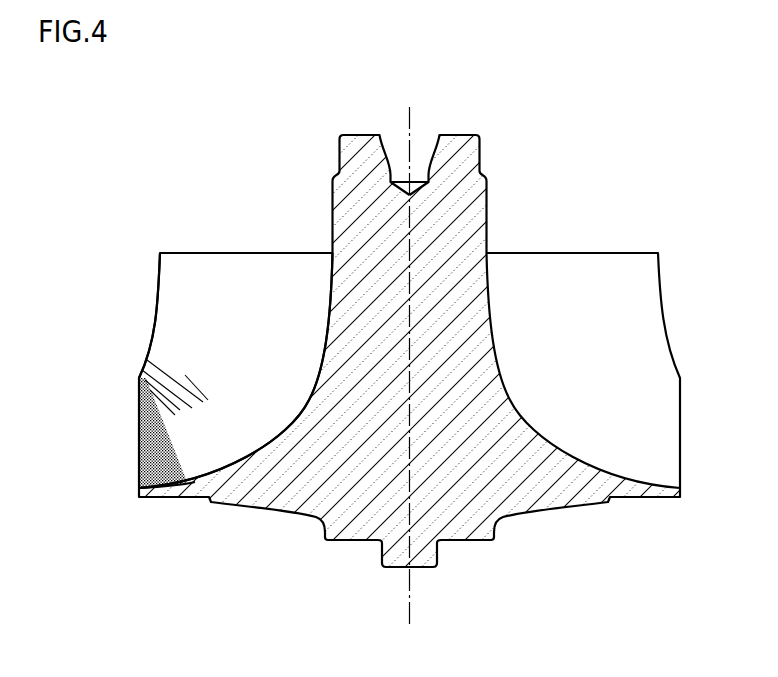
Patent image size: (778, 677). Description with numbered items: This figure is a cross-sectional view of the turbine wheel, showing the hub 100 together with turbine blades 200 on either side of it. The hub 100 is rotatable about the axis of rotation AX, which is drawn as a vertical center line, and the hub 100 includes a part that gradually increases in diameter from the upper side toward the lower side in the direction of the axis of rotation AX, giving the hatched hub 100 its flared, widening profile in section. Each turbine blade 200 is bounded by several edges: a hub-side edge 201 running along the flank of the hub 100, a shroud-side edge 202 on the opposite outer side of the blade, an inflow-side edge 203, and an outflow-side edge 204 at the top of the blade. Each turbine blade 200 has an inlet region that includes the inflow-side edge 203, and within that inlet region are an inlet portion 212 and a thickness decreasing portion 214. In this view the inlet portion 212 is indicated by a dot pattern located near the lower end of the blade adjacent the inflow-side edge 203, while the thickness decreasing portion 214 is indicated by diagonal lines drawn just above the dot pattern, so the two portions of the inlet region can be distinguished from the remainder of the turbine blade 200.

The hub 100 is at (486, 222).
The turbine blade 200 is at (160, 253).
The hub-side edge 201 is at (333, 270).
The shroud-side edge 202 is at (156, 328).
The inflow-side edge 203 is at (139, 438).
The outflow-side edge 204 is at (230, 252).
The inlet portion 212 is at (150, 475).
The thickness decreasing portion 214 is at (160, 399).
The axis of rotation AX is at (411, 130).